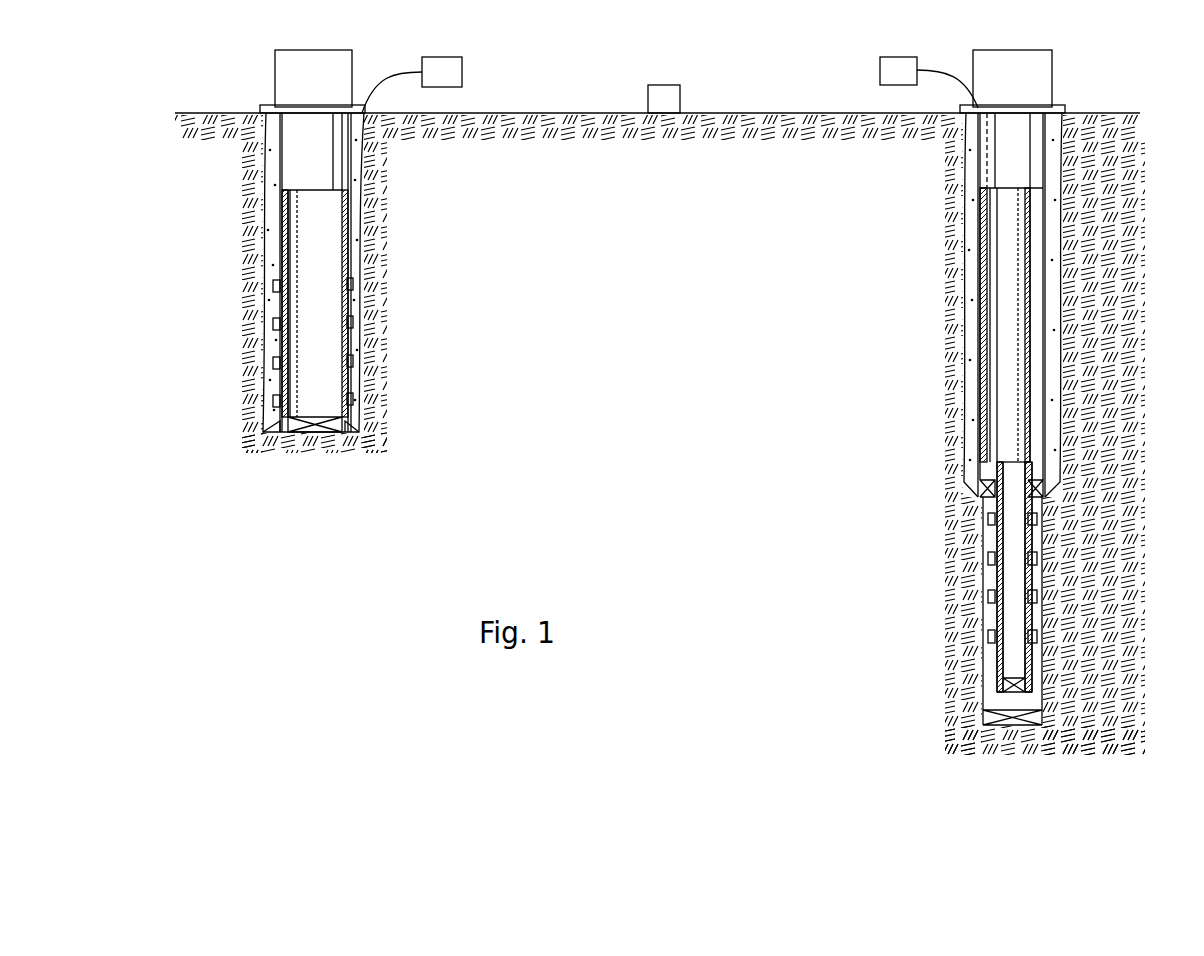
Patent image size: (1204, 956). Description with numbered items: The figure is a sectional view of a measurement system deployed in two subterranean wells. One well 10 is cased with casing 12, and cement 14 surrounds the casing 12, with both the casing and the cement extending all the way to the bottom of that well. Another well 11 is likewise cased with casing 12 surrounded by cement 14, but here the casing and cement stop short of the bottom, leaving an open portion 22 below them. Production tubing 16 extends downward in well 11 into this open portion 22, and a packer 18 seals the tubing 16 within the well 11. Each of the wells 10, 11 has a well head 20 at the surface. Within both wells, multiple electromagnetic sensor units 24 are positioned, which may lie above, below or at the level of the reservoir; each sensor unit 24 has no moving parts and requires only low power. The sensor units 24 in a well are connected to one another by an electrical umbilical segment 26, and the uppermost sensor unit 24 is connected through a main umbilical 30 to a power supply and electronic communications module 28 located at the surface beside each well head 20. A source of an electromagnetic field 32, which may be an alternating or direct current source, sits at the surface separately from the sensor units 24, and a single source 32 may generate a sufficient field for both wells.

The well 10 is at (210, 242).
The well 11 is at (1116, 248).
The casing 12 is at (268, 165).
The cement 14 is at (274, 196).
The production tubing 16 is at (995, 342).
The packer 18 is at (1044, 508).
The well head 20 is at (297, 49).
The open portion 22 is at (985, 689).
The electromagnetic sensor unit 24 is at (272, 324).
The electrical umbilical segment 26 is at (360, 325).
The power supply and electronic communications module 28 is at (462, 72).
The main umbilical 30 is at (356, 225).
The source of an electromagnetic field 32 is at (664, 85).